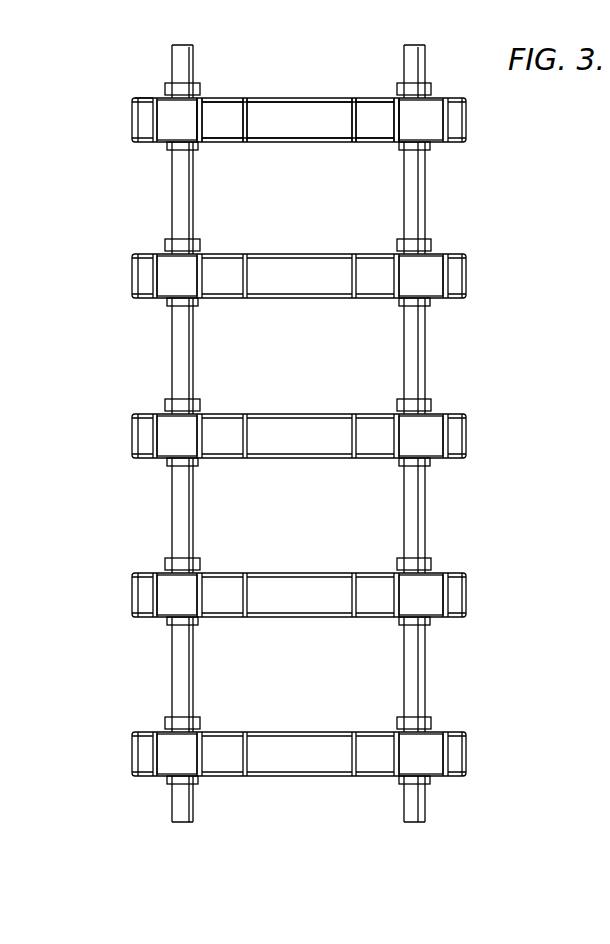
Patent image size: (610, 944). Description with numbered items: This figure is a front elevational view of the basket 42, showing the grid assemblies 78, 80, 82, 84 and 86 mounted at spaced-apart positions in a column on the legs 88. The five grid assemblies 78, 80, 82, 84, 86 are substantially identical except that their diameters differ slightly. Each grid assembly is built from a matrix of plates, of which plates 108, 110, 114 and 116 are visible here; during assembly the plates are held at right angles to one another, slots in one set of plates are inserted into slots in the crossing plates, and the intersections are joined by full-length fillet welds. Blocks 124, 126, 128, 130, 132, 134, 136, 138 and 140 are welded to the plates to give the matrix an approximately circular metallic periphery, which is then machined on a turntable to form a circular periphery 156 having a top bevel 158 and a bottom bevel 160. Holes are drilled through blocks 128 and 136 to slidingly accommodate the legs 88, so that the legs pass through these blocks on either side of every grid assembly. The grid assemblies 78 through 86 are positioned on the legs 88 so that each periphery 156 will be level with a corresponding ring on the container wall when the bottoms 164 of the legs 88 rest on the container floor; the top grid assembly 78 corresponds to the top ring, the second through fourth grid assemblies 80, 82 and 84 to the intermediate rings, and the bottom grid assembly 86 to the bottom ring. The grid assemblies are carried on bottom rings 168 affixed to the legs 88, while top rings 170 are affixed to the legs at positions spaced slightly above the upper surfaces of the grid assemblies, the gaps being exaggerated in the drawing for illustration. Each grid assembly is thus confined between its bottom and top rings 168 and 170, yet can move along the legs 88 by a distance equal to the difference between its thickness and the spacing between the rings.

The basket 42 is at (522, 191).
The top grid assembly 78 is at (318, 55).
The second grid assembly 80 is at (299, 246).
The third grid assembly 82 is at (299, 406).
The fourth grid assembly 84 is at (299, 565).
The bottom grid assembly 86 is at (299, 724).
The legs 88 is at (196, 343).
The plate 108 is at (205, 116).
The plate 110 is at (247, 125).
The plate 114 is at (351, 118).
The plate 116 is at (393, 110).
The block 124 is at (131, 125).
The block 126 is at (140, 143).
The block 128 is at (160, 101).
The block 130 is at (233, 133).
The block 132 is at (332, 130).
The block 134 is at (378, 130).
The block 136 is at (435, 106).
The block 138 is at (453, 136).
The block 140 is at (469, 119).
The circular periphery 156 is at (131, 110).
The top bevel 158 is at (266, 98).
The bottom bevel 160 is at (302, 143).
The bottoms of legs 164 is at (196, 822).
The bottom rings 168 is at (197, 151).
The top rings 170 is at (166, 86).